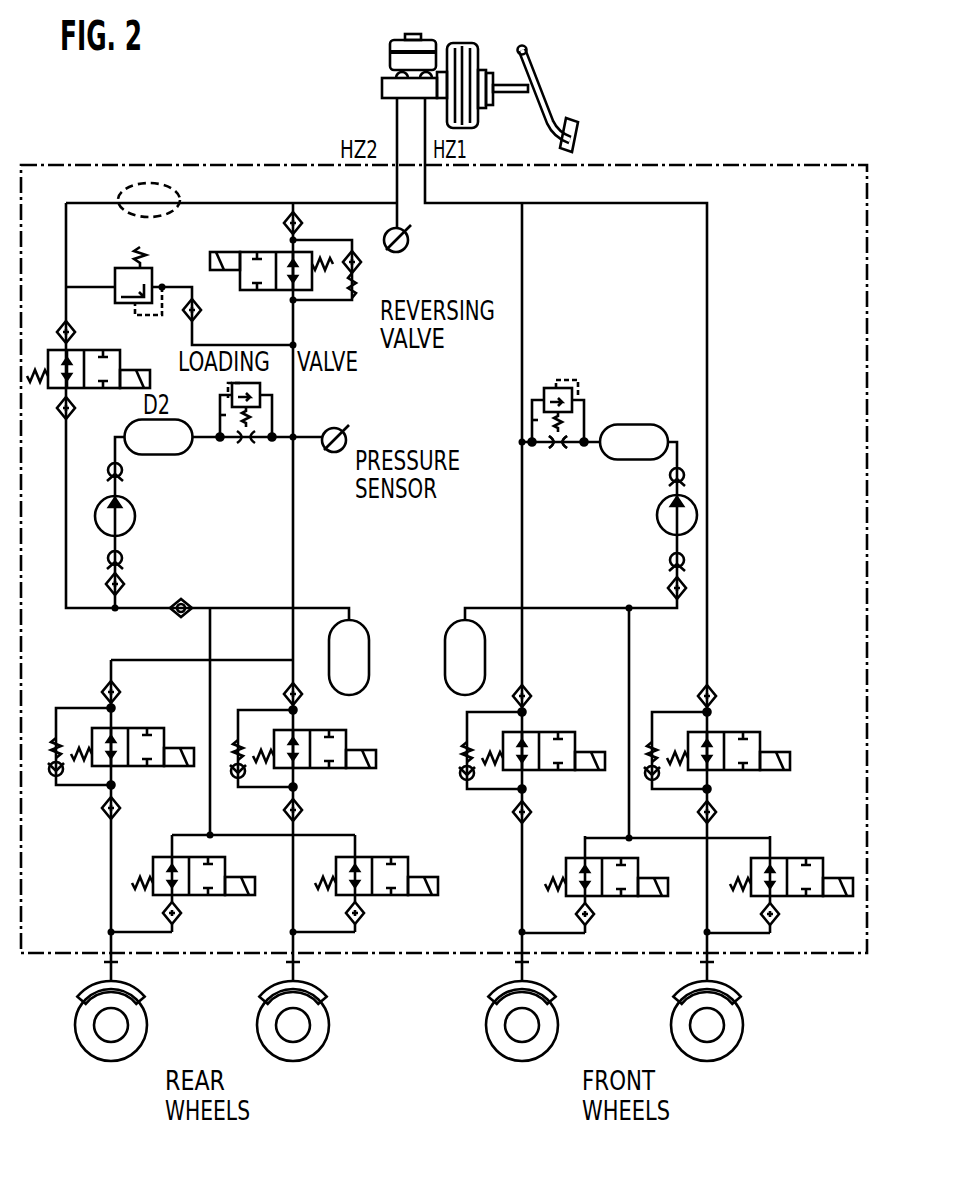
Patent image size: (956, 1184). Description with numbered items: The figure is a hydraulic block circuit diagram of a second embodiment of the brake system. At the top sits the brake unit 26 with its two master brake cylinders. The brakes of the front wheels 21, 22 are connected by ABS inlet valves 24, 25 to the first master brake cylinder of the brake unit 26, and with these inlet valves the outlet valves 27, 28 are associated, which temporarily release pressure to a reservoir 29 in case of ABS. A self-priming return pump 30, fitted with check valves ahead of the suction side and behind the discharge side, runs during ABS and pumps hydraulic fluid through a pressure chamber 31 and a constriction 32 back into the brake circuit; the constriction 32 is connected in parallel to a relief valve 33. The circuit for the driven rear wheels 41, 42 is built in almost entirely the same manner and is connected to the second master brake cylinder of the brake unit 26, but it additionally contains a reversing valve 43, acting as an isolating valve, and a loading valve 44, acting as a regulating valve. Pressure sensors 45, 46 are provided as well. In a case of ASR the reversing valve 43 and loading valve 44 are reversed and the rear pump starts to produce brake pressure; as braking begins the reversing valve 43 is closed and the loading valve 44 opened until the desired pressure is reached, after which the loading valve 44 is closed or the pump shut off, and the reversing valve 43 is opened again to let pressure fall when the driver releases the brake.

The brake unit 26 is at (478, 54).
The pressure sensor 46 is at (404, 250).
The reversing valve 43 is at (305, 292).
The loading valve 44 is at (118, 356).
The pressure sensor 45 is at (345, 432).
The relief valve 33 is at (548, 388).
The constriction 32 is at (558, 450).
The pressure chamber 31 is at (625, 426).
The return pump 30 is at (697, 510).
The reservoir 29 is at (458, 640).
The ABS inlet valve 24 is at (570, 732).
The ABS inlet valve 25 is at (755, 732).
The outlet valve 27 is at (638, 868).
The outlet valve 28 is at (815, 858).
The rear wheel 41 is at (147, 1025).
The rear wheel 42 is at (329, 1025).
The front wheel 21 is at (558, 1025).
The front wheel 22 is at (743, 1025).